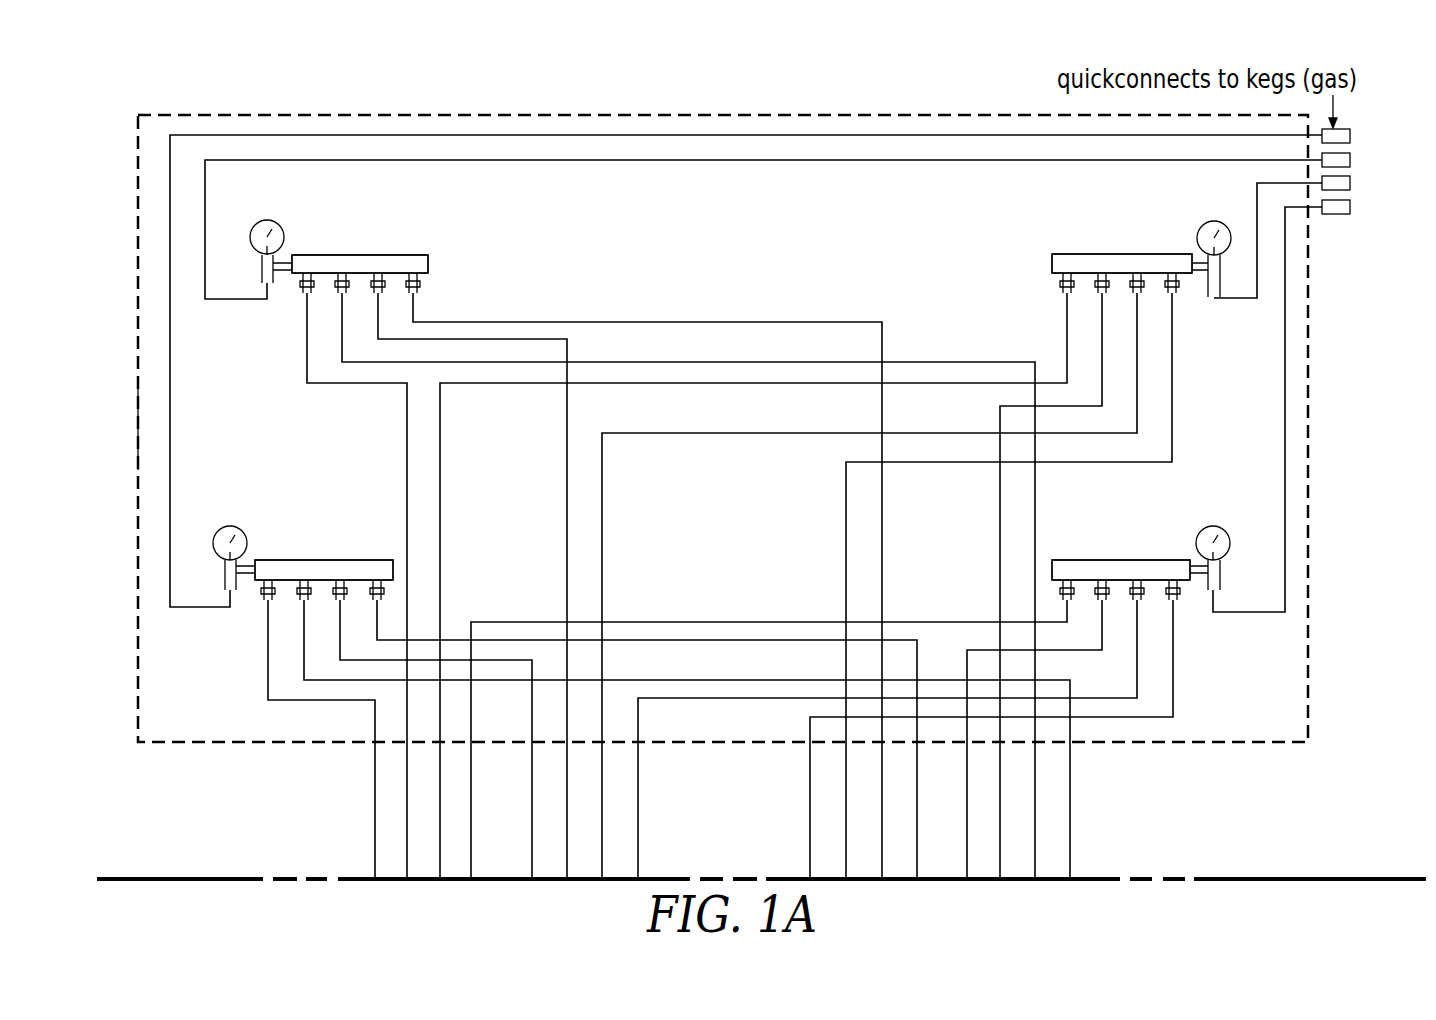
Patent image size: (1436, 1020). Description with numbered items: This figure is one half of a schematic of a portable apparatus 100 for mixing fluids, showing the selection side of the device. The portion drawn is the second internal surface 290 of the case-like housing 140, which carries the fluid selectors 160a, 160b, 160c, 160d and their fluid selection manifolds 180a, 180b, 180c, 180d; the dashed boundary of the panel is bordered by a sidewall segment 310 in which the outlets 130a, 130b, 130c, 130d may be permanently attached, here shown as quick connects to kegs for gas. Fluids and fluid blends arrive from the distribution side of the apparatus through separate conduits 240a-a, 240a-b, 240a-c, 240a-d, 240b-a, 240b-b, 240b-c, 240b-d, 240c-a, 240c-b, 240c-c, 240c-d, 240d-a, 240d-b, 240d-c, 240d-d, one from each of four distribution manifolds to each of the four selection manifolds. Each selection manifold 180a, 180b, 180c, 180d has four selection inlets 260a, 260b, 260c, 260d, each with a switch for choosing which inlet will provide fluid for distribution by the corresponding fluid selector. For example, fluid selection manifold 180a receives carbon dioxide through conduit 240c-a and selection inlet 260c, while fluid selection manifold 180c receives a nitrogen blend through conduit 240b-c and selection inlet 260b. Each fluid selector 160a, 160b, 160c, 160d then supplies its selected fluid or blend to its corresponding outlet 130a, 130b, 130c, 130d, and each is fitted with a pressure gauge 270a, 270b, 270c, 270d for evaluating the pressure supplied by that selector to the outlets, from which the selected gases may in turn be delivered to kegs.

The apparatus 100 is at (216, 75).
The housing 140 is at (138, 437).
The second internal surface 290 is at (625, 195).
The sidewall segment 310 is at (875, 115).
The outlet 130a is at (1350, 134).
The outlet 130b is at (1350, 160).
The outlet 130c is at (1350, 183).
The outlet 130d is at (1350, 207).
The fluid selector 160a is at (286, 556).
The fluid selector 160b is at (324, 250).
The fluid selector 160c is at (1148, 249).
The fluid selector 160d is at (1146, 555).
The fluid selection manifold 180a is at (368, 560).
The fluid selection manifold 180b is at (405, 255).
The fluid selection manifold 180c is at (1083, 254).
The fluid selection manifold 180d is at (1080, 560).
The pressure gauge 270a is at (230, 526).
The pressure gauge 270b is at (267, 220).
The pressure gauge 270c is at (1214, 221).
The pressure gauge 270d is at (1213, 526).
The selection inlet 260a is at (307, 293).
The selection inlet 260b is at (342, 293).
The selection inlet 260c is at (378, 293).
The selection inlet 260d is at (413, 293).
The conduit 240a-a is at (375, 847).
The conduit 240a-b is at (407, 847).
The conduit 240a-c is at (440, 847).
The conduit 240a-d is at (471, 847).
The conduit 240b-a is at (1070, 847).
The conduit 240b-b is at (1035, 847).
The conduit 240b-c is at (1000, 847).
The conduit 240b-d is at (967, 847).
The conduit 240c-a is at (532, 847).
The conduit 240c-b is at (567, 847).
The conduit 240c-c is at (602, 847).
The conduit 240c-d is at (638, 847).
The conduit 240d-a is at (917, 847).
The conduit 240d-b is at (882, 847).
The conduit 240d-c is at (846, 847).
The conduit 240d-d is at (810, 847).